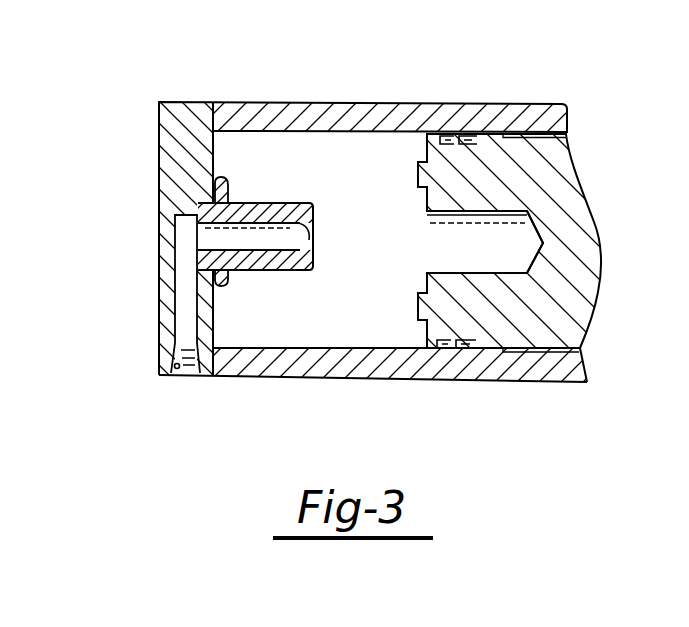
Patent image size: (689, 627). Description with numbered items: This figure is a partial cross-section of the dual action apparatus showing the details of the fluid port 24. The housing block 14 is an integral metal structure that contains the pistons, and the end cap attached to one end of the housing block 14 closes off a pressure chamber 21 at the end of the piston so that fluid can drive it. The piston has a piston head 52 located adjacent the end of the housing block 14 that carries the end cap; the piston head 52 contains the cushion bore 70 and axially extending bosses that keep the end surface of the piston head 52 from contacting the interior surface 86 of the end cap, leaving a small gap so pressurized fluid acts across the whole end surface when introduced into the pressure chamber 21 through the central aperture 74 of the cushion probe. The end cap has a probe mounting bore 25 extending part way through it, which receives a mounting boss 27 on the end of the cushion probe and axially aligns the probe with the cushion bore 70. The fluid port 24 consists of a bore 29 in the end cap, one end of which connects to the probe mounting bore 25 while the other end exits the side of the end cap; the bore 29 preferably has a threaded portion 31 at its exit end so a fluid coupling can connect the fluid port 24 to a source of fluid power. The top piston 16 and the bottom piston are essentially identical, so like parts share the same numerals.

The housing block 14 is at (320, 103).
The top piston 16 is at (560, 348).
The piston head 52 is at (420, 152).
The cushion bore 70 is at (450, 268).
The central aperture 74 is at (316, 234).
The interior surface 86 is at (214, 150).
The probe mounting bore 25 is at (207, 206).
The mounting boss 27 is at (202, 282).
The bore 29 is at (177, 323).
The threaded portion 31 is at (178, 378).
The fluid port 24 is at (192, 377).
The pressure chamber 21 is at (334, 320).